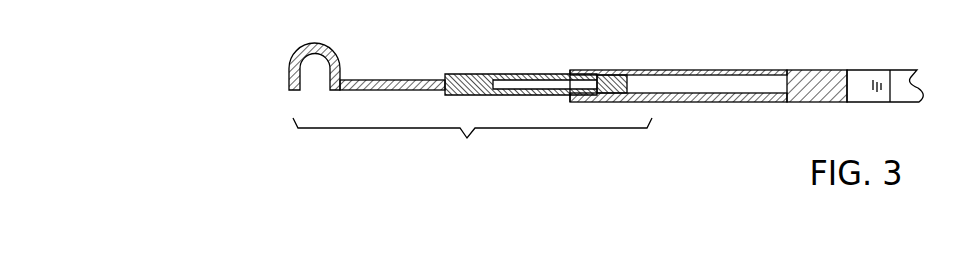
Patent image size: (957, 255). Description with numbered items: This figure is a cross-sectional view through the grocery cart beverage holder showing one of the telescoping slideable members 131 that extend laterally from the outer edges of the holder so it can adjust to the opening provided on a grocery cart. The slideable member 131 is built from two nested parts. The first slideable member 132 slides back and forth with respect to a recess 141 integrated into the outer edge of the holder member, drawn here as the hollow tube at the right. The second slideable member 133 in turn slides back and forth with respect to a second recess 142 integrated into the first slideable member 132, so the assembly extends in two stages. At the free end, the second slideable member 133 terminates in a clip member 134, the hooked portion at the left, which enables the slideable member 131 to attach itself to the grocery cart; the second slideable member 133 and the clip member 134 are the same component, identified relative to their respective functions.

The slideable member 131 is at (472, 142).
The first slideable member 132 is at (510, 74).
The second slideable member 133 is at (379, 80).
The clip member 134 is at (289, 70).
The recess 141 is at (713, 88).
The second recess 142 is at (540, 80).